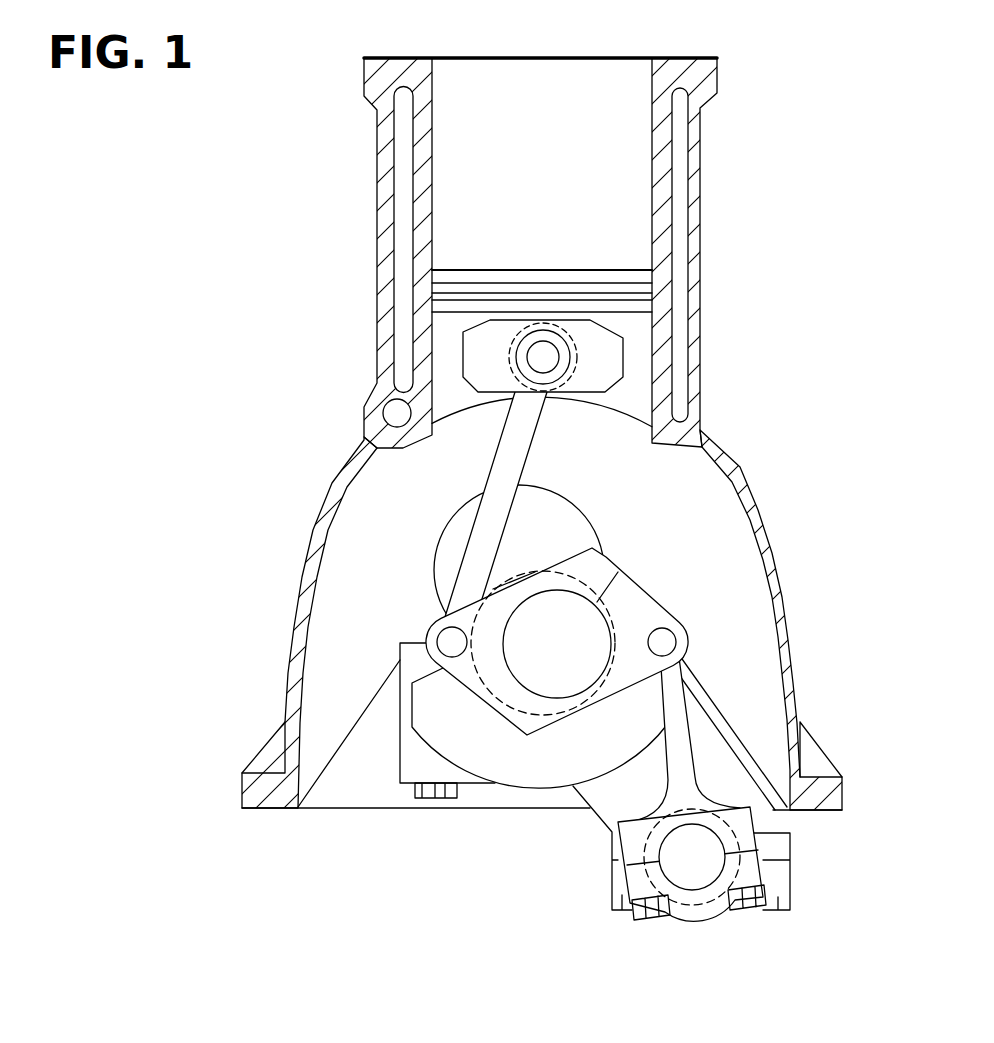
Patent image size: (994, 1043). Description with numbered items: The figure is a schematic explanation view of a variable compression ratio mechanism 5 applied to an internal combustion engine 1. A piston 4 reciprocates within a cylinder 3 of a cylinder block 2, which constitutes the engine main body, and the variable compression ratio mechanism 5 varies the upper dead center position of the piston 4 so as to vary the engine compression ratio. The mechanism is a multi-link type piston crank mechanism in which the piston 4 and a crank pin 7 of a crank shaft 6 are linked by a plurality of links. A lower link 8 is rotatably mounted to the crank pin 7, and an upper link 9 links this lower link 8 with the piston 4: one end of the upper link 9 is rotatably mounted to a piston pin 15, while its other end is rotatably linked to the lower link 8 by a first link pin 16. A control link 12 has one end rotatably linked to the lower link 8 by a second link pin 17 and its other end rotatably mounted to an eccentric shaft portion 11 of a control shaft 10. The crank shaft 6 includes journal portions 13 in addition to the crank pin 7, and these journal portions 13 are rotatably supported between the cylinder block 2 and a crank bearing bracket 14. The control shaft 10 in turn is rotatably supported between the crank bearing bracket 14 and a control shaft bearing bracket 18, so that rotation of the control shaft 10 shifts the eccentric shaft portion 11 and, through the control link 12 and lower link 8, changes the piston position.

The internal combustion engine 1 is at (557, 532).
The cylinder block 2 is at (333, 490).
The cylinder 3 is at (430, 188).
The piston 4 is at (551, 331).
The variable compression ratio mechanism 5 is at (683, 522).
The crank shaft 6 is at (503, 688).
The crank pin 7 is at (567, 680).
The lower link 8 is at (544, 720).
The upper link 9 is at (508, 465).
The control shaft 10 is at (758, 864).
The eccentric shaft portion 11 is at (697, 866).
The control link 12 is at (673, 723).
The journal portions 13 is at (523, 690).
The crank bearing bracket 14 is at (408, 742).
The piston pin 15 is at (543, 358).
The first link pin 16 is at (450, 646).
The second link pin 17 is at (663, 640).
The control shaft bearing bracket 18 is at (617, 877).